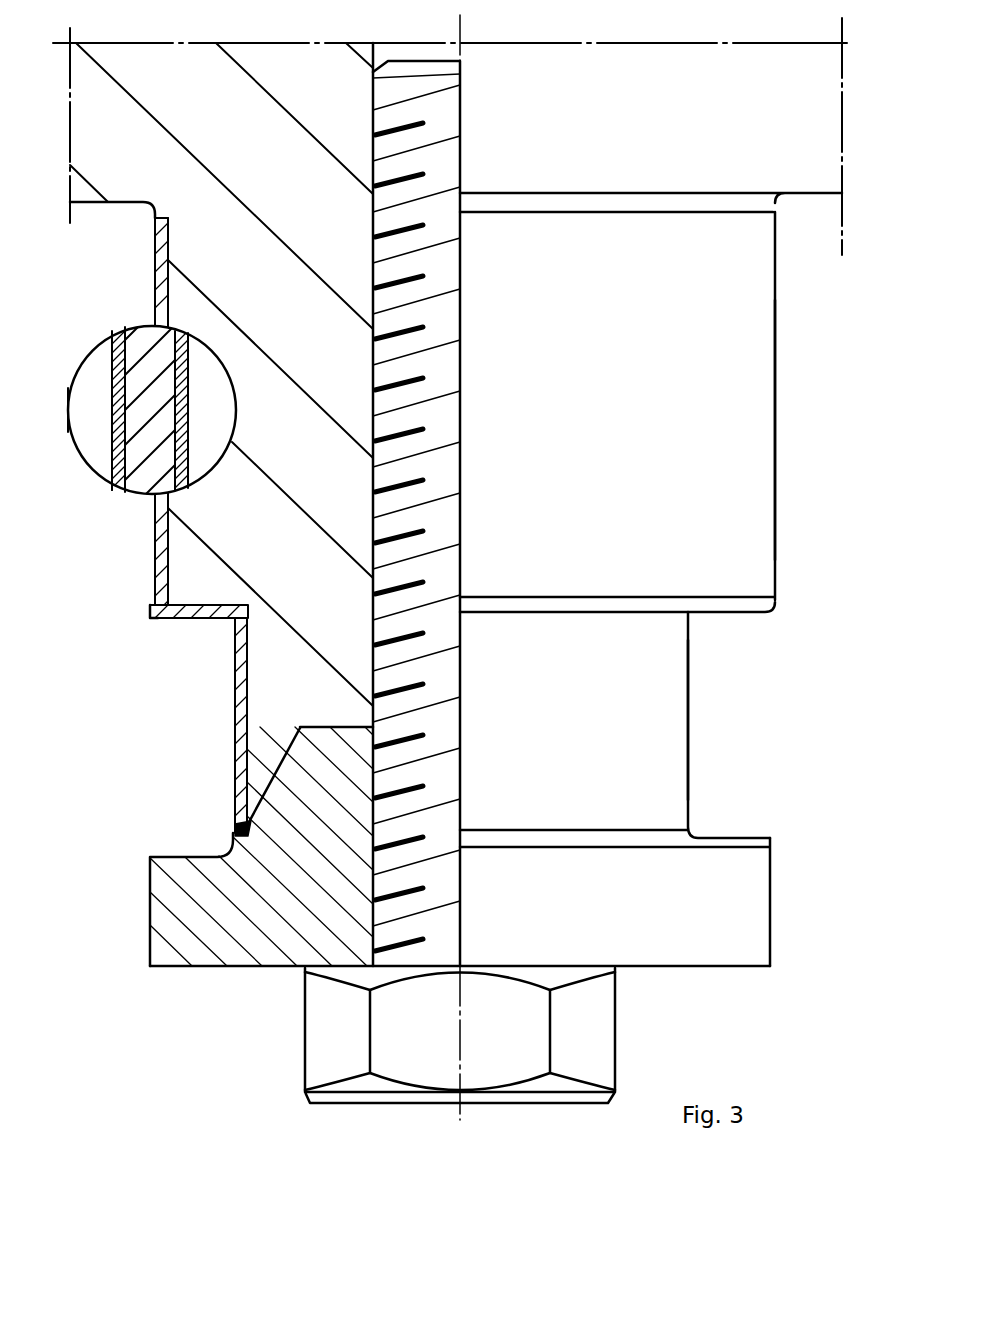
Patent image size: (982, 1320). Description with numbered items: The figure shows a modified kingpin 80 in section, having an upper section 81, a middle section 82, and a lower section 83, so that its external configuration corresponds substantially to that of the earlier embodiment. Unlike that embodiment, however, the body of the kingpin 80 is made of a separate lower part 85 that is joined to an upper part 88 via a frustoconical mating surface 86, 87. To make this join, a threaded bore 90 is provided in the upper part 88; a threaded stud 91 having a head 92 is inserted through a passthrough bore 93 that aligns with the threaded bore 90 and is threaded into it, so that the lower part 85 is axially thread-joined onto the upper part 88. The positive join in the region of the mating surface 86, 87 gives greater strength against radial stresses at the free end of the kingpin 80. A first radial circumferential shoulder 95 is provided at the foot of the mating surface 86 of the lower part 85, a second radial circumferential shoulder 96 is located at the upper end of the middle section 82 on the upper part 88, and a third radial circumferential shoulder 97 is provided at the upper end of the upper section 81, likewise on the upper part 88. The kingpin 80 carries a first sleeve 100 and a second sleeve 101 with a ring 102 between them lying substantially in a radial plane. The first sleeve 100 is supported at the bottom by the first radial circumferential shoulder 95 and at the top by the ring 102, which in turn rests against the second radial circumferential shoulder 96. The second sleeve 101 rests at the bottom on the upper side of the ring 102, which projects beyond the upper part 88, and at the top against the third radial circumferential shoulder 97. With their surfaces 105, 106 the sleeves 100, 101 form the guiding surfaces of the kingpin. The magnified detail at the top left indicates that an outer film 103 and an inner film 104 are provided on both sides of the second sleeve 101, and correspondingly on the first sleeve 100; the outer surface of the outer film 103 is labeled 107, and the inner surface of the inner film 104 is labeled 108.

The kingpin 80 is at (217, 1005).
The upper section 81 is at (775, 425).
The middle section 82 is at (690, 710).
The lower section 83 is at (771, 893).
The lower part 85 is at (163, 918).
The mating surface 86 is at (253, 802).
The mating surface 87 is at (298, 730).
The upper part 88 is at (212, 530).
The threaded bore 90 is at (370, 497).
The threaded stud 91 is at (445, 378).
The head 92 is at (493, 1063).
The passthrough bore 93 is at (395, 972).
The first radial circumferential shoulder 95 is at (227, 820).
The second radial circumferential shoulder 96 is at (205, 605).
The third radial circumferential shoulder 97 is at (155, 222).
The first sleeve 100 is at (235, 725).
The second sleeve 101 is at (153, 297).
The ring 102 is at (168, 620).
The outer film 103 is at (112, 407).
The inner film 104 is at (188, 408).
The surface 105 is at (775, 322).
The surface 106 is at (688, 772).
The outer surface 107 is at (112, 445).
The inner surface 108 is at (190, 375).